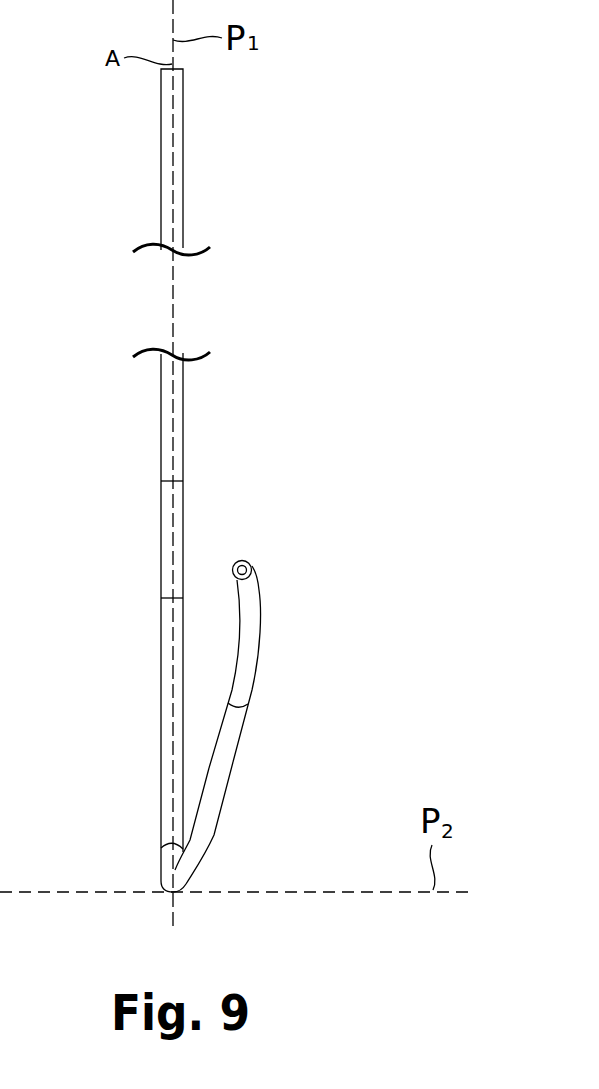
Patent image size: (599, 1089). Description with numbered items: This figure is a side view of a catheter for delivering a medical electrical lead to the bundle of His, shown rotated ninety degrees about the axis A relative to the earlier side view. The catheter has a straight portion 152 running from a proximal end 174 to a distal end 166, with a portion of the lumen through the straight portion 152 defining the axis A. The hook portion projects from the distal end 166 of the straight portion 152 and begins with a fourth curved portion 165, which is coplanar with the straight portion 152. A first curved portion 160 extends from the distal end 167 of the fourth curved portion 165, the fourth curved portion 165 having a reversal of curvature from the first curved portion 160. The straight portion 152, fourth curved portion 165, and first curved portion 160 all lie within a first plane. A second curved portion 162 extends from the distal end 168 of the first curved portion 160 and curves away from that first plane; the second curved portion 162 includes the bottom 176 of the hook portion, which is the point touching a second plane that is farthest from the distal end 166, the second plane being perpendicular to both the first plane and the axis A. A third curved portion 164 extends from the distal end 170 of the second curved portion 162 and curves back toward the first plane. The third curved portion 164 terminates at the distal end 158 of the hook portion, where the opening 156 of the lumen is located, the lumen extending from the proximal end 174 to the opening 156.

The straight portion 152 is at (158, 392).
The opening 156 is at (246, 561).
The distal end of the hook portion 158 is at (252, 566).
The first curved portion 160 is at (158, 767).
The second curved portion 162 is at (224, 807).
The third curved portion 164 is at (264, 635).
The fourth curved portion 165 is at (158, 545).
The distal end of the straight portion 166 is at (160, 468).
The distal end of the fourth curved portion 167 is at (160, 590).
The distal end of the first curved portion 168 is at (160, 834).
The distal end of the second curved portion 170 is at (247, 712).
The proximal end of the straight portion 174 is at (185, 78).
The bottom of the hook portion 176 is at (176, 894).